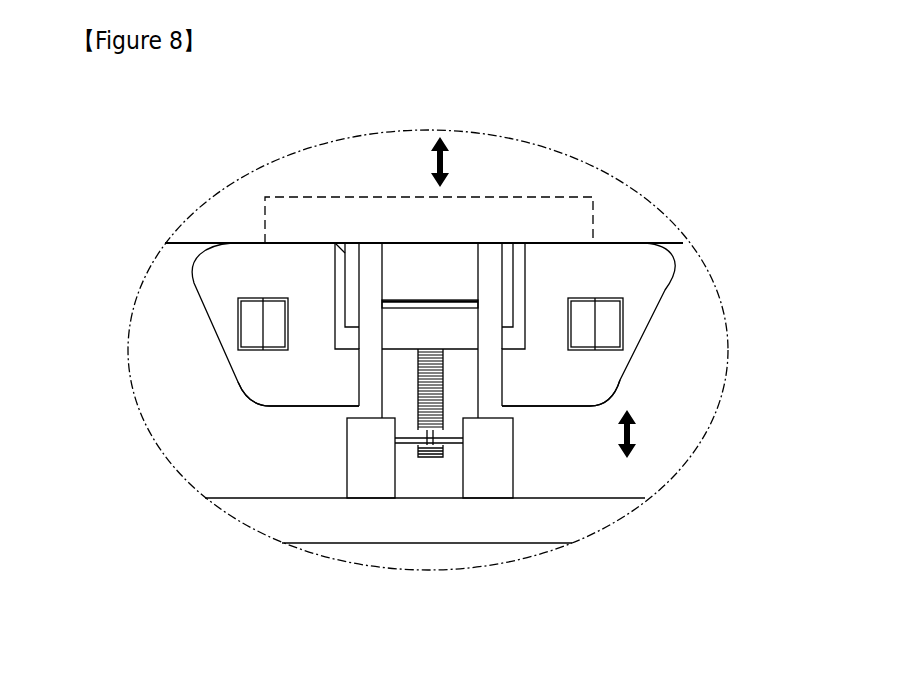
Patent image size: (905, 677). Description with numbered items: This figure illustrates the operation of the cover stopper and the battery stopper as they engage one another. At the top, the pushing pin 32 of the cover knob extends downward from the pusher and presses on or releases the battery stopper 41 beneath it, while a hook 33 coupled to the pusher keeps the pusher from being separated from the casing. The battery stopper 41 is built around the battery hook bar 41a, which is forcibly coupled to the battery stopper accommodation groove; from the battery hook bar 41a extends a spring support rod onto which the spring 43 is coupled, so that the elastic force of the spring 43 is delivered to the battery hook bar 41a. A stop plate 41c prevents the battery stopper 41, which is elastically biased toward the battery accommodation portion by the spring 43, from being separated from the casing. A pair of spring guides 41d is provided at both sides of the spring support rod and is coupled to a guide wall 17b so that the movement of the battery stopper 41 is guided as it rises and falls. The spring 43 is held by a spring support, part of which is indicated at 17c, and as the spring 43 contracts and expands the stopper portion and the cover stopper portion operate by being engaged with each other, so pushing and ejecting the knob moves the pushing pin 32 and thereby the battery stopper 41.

The pushing pin 32 is at (387, 234).
The battery stopper 41 is at (490, 296).
The battery hook bar 41a is at (452, 224).
The stop plate 41c is at (430, 296).
The spring guide 41d is at (430, 382).
The hook 33 is at (436, 324).
The spring 43 is at (280, 403).
The guide wall 17b is at (435, 458).
The base plate 17c is at (425, 529).